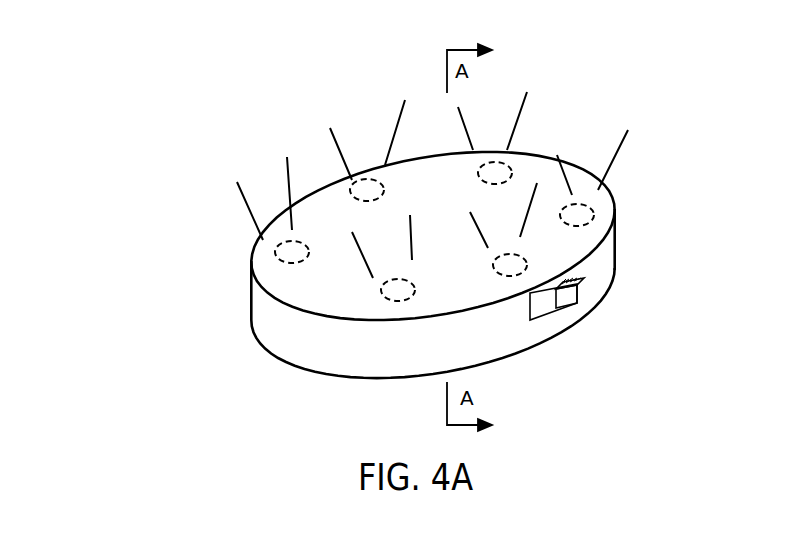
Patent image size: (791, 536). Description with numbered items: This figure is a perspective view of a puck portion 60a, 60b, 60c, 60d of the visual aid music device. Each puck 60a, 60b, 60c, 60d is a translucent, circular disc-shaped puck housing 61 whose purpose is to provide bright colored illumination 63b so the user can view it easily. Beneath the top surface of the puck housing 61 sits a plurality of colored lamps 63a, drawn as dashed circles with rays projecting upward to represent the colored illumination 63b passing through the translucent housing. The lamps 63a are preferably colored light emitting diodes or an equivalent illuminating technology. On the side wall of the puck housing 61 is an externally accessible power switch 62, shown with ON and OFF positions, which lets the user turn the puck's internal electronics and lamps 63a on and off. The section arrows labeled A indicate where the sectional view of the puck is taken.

The puck portion 60a is at (172, 148).
The puck portion 60b is at (395, 228).
The puck portion 60c is at (395, 228).
The puck portion 60d is at (395, 228).
The puck housing 61 is at (616, 240).
The power switch 62 is at (545, 301).
The colored lamps 63a is at (577, 203).
The colored illumination 63b is at (250, 208).